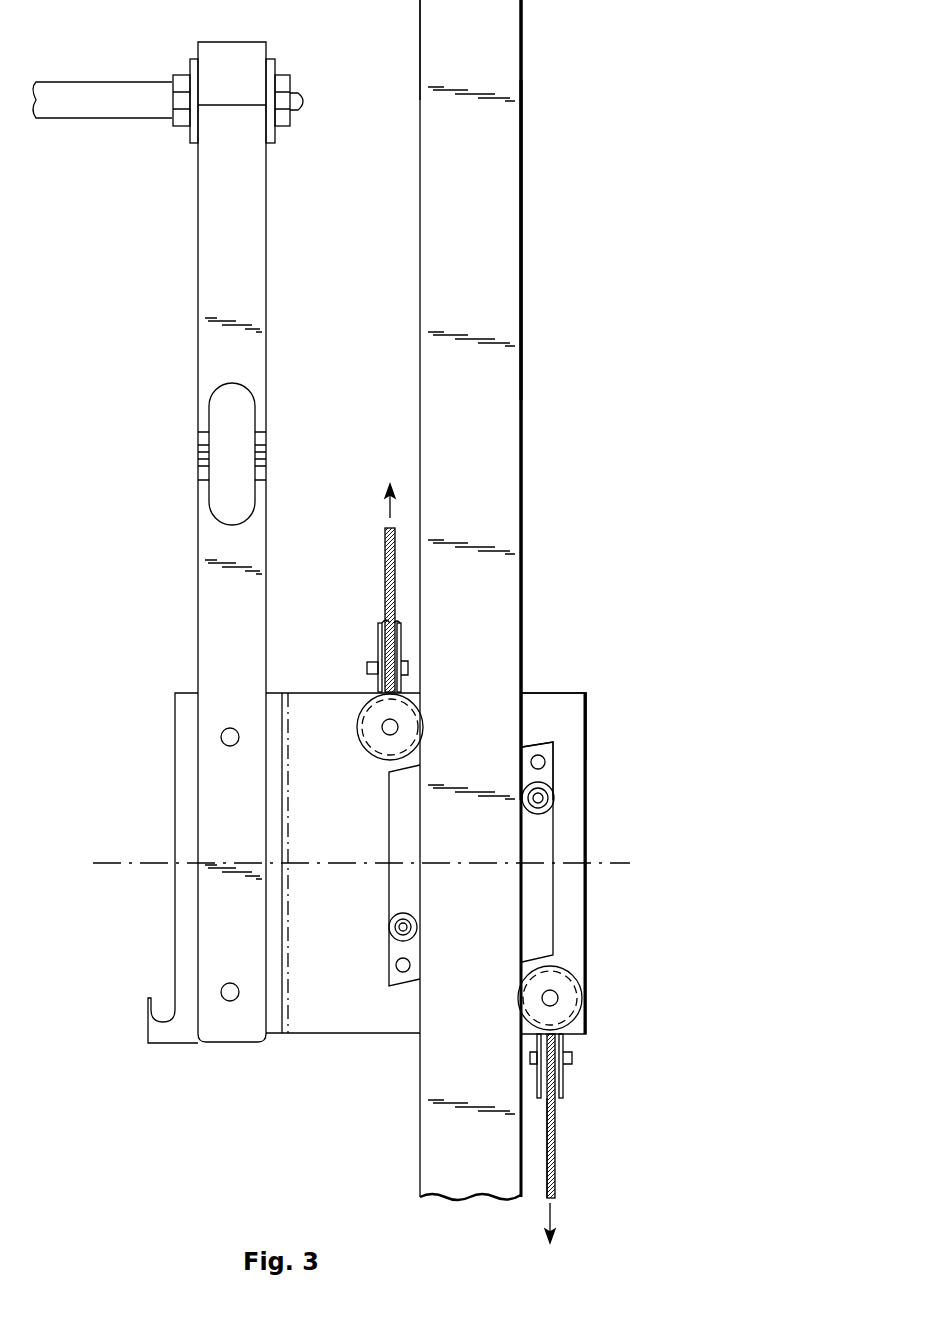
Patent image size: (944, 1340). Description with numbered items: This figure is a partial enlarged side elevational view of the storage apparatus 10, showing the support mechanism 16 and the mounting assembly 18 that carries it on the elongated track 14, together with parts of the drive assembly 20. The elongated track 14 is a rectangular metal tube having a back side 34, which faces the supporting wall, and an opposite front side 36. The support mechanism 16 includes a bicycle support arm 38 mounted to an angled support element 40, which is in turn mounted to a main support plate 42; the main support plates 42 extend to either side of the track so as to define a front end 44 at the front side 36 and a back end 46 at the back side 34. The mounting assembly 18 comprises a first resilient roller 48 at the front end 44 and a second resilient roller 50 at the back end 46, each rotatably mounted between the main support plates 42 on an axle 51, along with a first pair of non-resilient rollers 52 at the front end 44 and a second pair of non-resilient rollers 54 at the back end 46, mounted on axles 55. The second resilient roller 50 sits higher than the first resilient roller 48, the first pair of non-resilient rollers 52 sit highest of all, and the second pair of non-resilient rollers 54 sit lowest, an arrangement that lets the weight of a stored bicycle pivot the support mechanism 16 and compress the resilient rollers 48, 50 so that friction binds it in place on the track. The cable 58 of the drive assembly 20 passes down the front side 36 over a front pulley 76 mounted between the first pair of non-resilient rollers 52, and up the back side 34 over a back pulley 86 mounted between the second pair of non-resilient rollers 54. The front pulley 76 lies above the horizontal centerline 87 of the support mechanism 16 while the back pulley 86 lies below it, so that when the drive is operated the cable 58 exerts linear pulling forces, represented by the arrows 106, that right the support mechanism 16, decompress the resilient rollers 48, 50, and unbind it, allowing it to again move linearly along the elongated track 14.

The storage apparatus 10 is at (569, 72).
The elongated track 14 is at (524, 178).
The support mechanism 16 is at (588, 706).
The mounting assembly 18 is at (572, 798).
The drive assembly 20 is at (562, 1112).
The back side 34 is at (522, 438).
The front side 36 is at (420, 405).
The bicycle support arm 38 is at (87, 102).
The angled support element 40 is at (222, 293).
The main support plate 42 is at (575, 890).
The front end 44 is at (405, 1005).
The back end 46 is at (543, 702).
The first resilient roller 48 is at (396, 940).
The second resilient roller 50 is at (550, 810).
The axle 51 is at (398, 926).
The first pair of non-resilient rollers 52 is at (380, 756).
The second pair of non-resilient rollers 54 is at (570, 1000).
The axle 55 is at (385, 732).
The cable 58 is at (386, 572).
The front pulley 76 is at (378, 636).
The back pulley 86 is at (559, 1093).
The horizontal centerline 87 is at (107, 863).
The arrows 106 is at (390, 519).